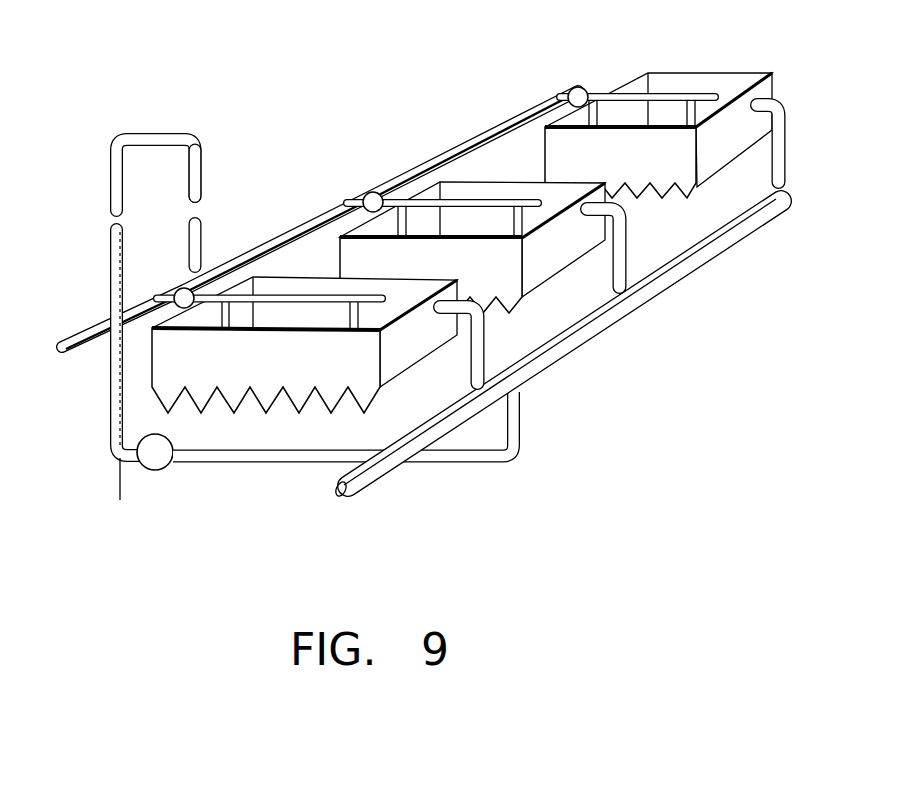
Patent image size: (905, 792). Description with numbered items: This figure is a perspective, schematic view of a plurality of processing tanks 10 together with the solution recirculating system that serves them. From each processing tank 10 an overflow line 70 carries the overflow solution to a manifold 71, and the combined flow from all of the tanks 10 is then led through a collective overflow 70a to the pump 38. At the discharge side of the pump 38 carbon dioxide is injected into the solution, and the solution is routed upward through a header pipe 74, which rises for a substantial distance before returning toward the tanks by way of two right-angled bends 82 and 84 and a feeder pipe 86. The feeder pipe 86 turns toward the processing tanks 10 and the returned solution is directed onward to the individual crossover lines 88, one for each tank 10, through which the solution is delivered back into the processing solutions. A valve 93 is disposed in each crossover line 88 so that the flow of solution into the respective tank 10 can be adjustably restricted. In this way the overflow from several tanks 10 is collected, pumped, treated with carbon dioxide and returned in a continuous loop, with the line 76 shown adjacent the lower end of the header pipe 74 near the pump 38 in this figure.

The processing tank 10 is at (374, 266).
The pump 38 is at (156, 478).
The overflow line 70 is at (485, 332).
The collective overflow 70a is at (473, 462).
The manifold 71 is at (583, 333).
The header pipe 74 is at (108, 378).
The line 76 is at (117, 482).
The right-angled bend 82 is at (111, 140).
The right-angled bend 84 is at (201, 140).
The feeder pipe 86 is at (207, 192).
The crossover line 88 is at (308, 294).
The valve 93 is at (176, 290).